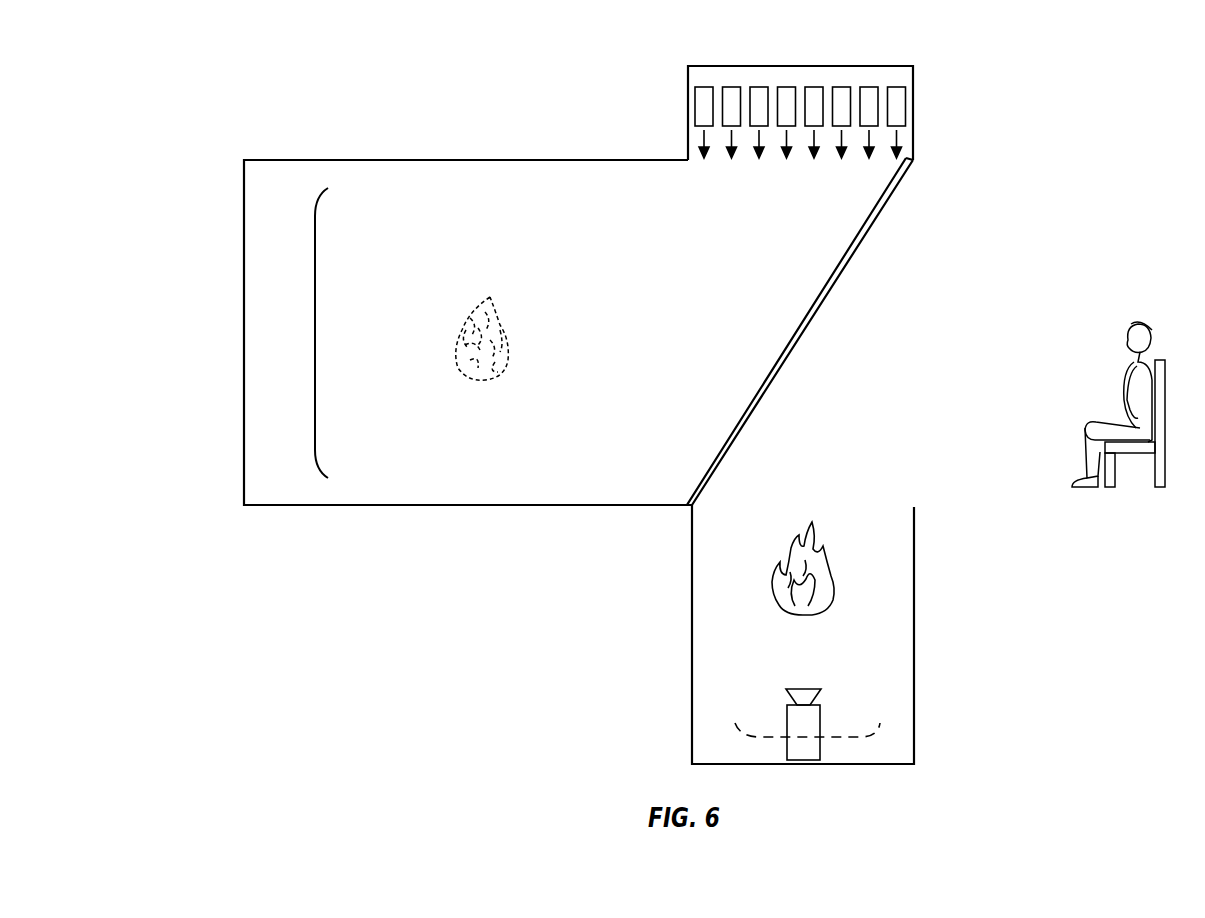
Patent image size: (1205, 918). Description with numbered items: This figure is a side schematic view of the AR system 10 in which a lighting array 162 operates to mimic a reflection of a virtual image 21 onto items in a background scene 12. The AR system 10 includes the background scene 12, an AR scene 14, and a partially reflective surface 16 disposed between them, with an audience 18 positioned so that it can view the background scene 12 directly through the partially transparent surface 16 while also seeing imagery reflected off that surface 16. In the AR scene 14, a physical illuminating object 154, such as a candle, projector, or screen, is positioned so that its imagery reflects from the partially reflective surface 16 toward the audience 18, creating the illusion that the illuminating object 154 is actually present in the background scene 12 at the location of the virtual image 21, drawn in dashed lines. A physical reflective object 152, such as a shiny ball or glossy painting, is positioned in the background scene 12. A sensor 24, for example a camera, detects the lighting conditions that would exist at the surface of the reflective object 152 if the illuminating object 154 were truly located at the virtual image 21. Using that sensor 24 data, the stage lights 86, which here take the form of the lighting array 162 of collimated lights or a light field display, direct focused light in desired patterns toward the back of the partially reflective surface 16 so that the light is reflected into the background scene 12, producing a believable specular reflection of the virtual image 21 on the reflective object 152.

The AR system 10 is at (259, 89).
The background scene 12 is at (505, 160).
The physical reflective object 152 is at (315, 327).
The virtual image 21 is at (491, 296).
The lighting array 162 is at (688, 104).
The stage lights 86 is at (800, 113).
The partially reflective surface 16 is at (804, 336).
The AR scene 14 is at (914, 634).
The physical illuminating object 154 is at (815, 526).
The sensor 24 is at (821, 720).
The audience 18 is at (1148, 325).